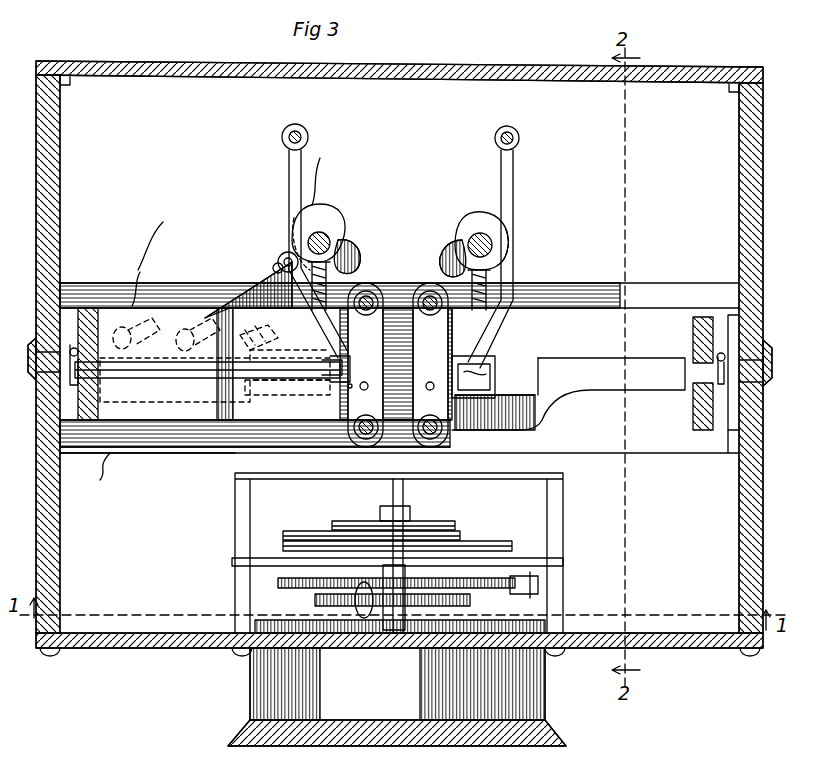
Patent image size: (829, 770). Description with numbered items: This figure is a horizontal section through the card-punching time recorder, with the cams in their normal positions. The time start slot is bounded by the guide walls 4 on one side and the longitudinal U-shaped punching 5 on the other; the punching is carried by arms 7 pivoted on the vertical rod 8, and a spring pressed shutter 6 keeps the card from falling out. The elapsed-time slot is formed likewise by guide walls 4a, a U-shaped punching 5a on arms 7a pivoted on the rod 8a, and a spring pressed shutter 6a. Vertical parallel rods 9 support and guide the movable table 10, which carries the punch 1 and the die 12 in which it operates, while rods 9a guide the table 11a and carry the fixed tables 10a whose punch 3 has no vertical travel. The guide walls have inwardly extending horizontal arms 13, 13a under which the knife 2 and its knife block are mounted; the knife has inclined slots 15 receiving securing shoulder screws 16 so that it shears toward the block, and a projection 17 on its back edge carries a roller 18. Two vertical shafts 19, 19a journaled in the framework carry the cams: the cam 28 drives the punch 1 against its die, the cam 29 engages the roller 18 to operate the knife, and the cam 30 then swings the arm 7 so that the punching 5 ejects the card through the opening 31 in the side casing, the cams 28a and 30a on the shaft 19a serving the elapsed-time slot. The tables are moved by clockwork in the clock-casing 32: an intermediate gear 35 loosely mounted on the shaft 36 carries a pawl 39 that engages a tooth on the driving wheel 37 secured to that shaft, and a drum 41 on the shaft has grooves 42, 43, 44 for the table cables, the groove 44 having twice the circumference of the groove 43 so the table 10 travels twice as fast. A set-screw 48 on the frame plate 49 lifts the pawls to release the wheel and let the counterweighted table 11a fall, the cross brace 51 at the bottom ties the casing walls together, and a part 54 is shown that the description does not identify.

The punch 1 is at (352, 266).
The knife 2 is at (215, 360).
The punch 3 is at (490, 280).
The guide walls 4 is at (100, 300).
The guide walls 4a is at (703, 408).
The longitudinal punching of U-shape cross section 5 is at (346, 372).
The U-shaped punching 5a is at (492, 374).
The spring pressed shutter 6 is at (34, 340).
The spring pressed shutter 6a is at (770, 356).
The arms 7 is at (288, 184).
The arms 7a is at (515, 176).
The vertical rod 8 is at (308, 135).
The rod 8a is at (519, 136).
The vertical parallel rods 9 is at (375, 292).
The rods 9a is at (436, 292).
The movable table 10 is at (365, 365).
The tables 10a is at (420, 336).
The table 11a is at (596, 378).
The die 12 is at (308, 402).
The horizontal arm 13 is at (165, 412).
The horizontal arm 13a is at (159, 236).
The inclined slots 15 is at (230, 296).
The securing shoulder screws 16 is at (140, 278).
The projection 17 is at (274, 268).
The roller 18 is at (288, 252).
The vertical shaft 19 is at (338, 232).
The vertical shaft 19a is at (480, 232).
The cam 28 is at (312, 210).
The cam 28a is at (518, 226).
The cam 29 is at (326, 172).
The cam 30 is at (350, 250).
The cam 30a is at (452, 240).
The opening 31 is at (45, 378).
The clock-casing 32 is at (397, 697).
The intermediate gear 35 is at (305, 588).
The shaft 36 is at (404, 496).
The driving wheel 37 is at (352, 604).
The pawl 39 is at (472, 600).
The drum 41 is at (376, 514).
The groove 42 is at (458, 526).
The groove 43 is at (462, 536).
The groove 44 is at (514, 548).
The set-screw 48 is at (360, 618).
The frame plate 49 is at (235, 562).
The cross brace 51 is at (147, 476).
The block 54 is at (540, 586).